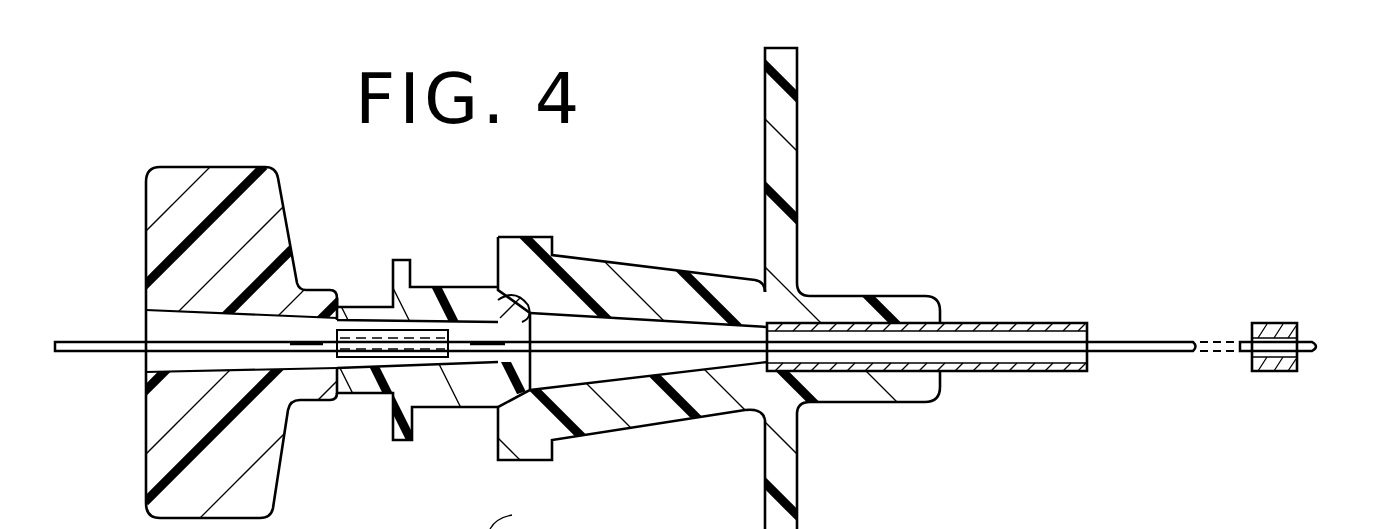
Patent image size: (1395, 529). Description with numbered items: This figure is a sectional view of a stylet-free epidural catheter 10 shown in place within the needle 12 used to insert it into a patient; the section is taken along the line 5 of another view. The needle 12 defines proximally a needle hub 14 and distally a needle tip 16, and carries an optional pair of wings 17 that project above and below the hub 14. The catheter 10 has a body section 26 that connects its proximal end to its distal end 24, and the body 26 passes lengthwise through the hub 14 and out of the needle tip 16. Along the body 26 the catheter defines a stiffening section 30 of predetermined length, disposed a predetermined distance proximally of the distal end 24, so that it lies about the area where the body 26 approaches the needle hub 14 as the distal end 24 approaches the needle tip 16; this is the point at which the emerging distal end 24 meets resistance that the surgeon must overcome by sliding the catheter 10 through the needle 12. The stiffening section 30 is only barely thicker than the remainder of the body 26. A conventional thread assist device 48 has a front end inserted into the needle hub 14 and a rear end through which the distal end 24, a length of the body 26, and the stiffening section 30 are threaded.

The section line 5- 5 is at (484, 370).
The stylet-free epidural catheter 10 is at (667, 328).
The needle 12 is at (1025, 322).
The needle hub 14 is at (457, 285).
The needle tip 16 is at (1293, 325).
The wings 17 is at (783, 127).
The distal end 24 is at (1318, 349).
The body section 26 is at (620, 352).
The stiffening section 30 is at (358, 368).
The thread assist device 48 is at (238, 168).